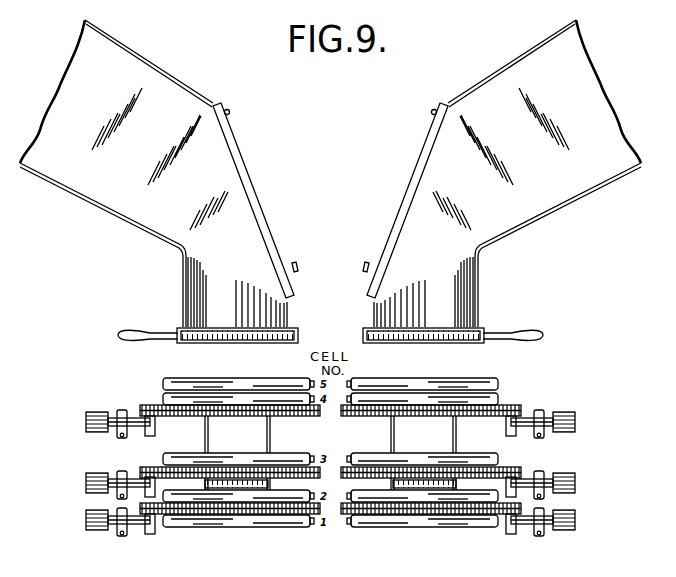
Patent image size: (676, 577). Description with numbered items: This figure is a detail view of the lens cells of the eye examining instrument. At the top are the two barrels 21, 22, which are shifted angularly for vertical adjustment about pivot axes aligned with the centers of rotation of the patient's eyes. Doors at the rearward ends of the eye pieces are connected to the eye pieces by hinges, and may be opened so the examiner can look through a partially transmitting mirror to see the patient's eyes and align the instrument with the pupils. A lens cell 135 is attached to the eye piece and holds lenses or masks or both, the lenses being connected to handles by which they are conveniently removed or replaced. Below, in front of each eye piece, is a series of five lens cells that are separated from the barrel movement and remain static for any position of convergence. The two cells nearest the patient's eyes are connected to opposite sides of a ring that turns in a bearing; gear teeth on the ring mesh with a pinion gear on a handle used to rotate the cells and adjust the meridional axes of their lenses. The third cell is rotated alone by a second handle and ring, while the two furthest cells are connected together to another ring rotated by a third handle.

The barrel 21 is at (138, 67).
The barrel 22 is at (566, 193).
The lens cell 135 is at (418, 343).